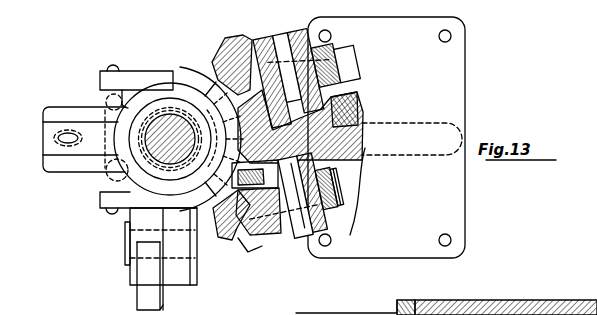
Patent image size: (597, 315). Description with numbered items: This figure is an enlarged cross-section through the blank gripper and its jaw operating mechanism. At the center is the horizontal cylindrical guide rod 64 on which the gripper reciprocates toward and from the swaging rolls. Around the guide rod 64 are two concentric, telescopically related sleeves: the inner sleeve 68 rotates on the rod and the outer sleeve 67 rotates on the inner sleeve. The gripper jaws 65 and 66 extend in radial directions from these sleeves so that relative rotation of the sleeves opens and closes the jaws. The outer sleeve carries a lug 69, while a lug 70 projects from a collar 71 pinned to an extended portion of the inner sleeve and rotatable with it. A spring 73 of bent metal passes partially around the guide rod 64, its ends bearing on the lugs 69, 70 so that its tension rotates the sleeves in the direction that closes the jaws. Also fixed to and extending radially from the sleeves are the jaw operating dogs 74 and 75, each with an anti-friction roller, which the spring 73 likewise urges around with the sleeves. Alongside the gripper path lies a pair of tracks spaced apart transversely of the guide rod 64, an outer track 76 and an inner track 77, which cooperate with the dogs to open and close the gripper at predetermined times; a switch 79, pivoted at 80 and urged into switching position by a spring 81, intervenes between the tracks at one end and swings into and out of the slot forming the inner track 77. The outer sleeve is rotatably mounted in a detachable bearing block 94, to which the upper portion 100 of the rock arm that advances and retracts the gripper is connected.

The guide rod 64 is at (168, 116).
The gripper jaw 65 is at (66, 114).
The gripper jaw 66 is at (55, 168).
The outer sleeve 67 is at (150, 92).
The inner sleeve 68 is at (188, 206).
The lug 69 is at (108, 106).
The lug 70 is at (102, 193).
The collar 71 is at (272, 313).
The spring 73 is at (176, 167).
The jaw operating dog 74 is at (250, 245).
The jaw operating dog 75 is at (250, 88).
The outer track 76 is at (222, 62).
The inner track 77 is at (297, 162).
The switch 79 is at (330, 58).
The pivot 80 is at (302, 36).
The spring 81 is at (332, 80).
The bearing block 94 is at (181, 280).
The upper portion of rock arm 100 is at (145, 292).